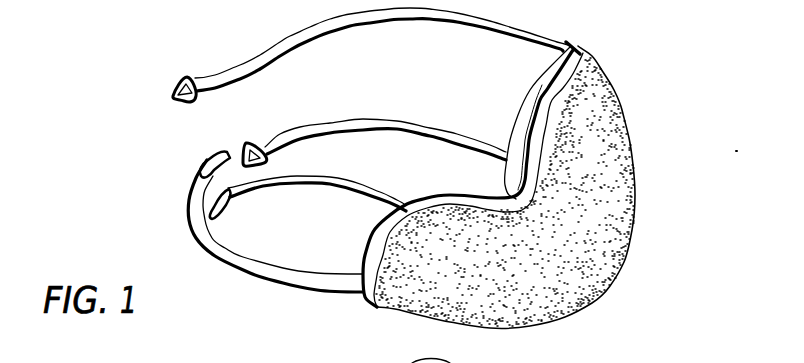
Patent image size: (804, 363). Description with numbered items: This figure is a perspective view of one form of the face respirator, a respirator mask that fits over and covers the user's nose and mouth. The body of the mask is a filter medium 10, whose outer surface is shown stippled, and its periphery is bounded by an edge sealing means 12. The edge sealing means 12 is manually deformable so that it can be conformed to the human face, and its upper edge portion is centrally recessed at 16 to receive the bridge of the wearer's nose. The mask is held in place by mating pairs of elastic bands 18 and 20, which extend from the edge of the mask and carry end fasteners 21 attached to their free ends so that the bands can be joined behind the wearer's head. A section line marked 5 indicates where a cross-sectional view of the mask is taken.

The filter medium 10 is at (637, 196).
The edge sealing means 12 is at (581, 48).
The centrally recessed upper edge portion 16 is at (518, 198).
The elastic bands 18 is at (482, 20).
The elastic bands 20 is at (462, 143).
The end fasteners 21 is at (177, 86).
The section line 5- 5 is at (455, 245).